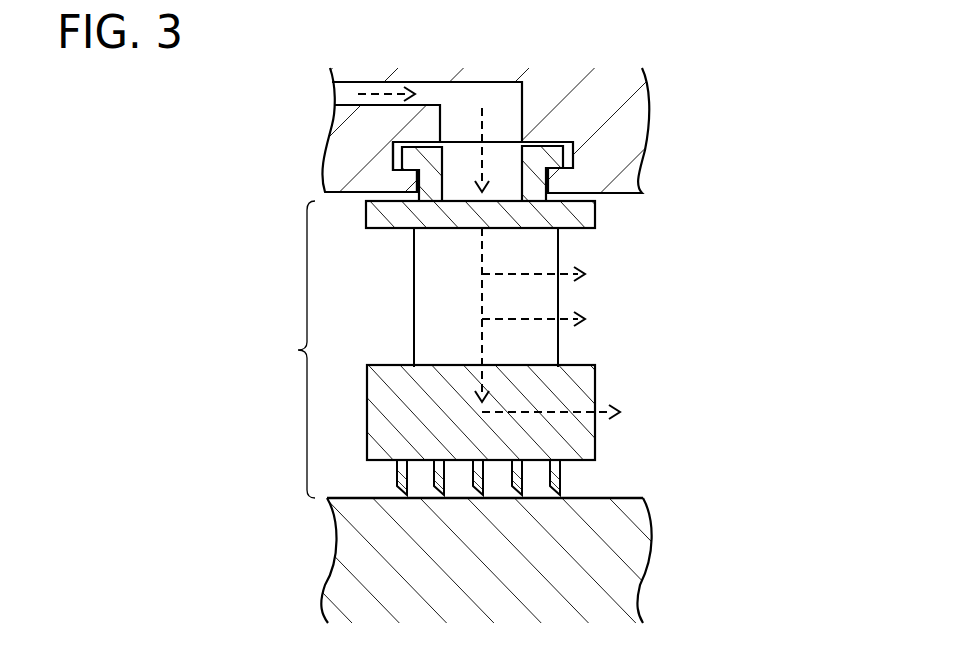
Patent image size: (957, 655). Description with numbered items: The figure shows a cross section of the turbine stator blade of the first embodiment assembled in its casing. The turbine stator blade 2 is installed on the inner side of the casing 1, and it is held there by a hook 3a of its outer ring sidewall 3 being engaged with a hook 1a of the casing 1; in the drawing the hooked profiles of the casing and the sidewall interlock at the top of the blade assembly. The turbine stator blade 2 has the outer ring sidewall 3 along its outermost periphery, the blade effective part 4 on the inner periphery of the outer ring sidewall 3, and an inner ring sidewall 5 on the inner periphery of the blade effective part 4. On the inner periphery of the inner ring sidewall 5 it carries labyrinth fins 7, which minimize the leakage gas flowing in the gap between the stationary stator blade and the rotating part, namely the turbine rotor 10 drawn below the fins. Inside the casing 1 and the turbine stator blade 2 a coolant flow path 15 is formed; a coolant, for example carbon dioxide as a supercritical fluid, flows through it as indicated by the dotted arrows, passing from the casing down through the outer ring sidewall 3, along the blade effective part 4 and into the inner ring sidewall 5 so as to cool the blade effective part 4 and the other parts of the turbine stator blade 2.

The casing 1 is at (333, 158).
The hook 1a is at (402, 182).
The coolant flow path 15 is at (333, 92).
The hook 3a is at (412, 158).
The outer ring sidewall 3 is at (375, 216).
The blade effective part 4 is at (433, 292).
The inner ring sidewall 5 is at (380, 420).
The labyrinth fins 7 is at (396, 482).
The turbine stator blade 2 is at (296, 349).
The turbine rotor 10 is at (336, 582).